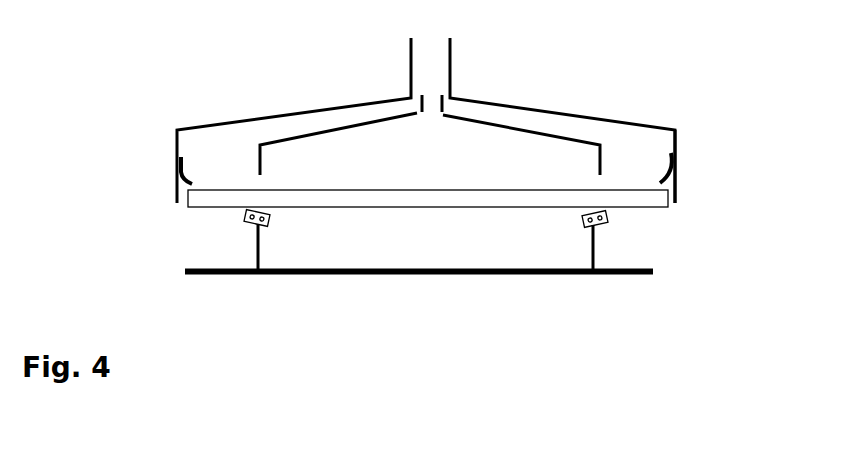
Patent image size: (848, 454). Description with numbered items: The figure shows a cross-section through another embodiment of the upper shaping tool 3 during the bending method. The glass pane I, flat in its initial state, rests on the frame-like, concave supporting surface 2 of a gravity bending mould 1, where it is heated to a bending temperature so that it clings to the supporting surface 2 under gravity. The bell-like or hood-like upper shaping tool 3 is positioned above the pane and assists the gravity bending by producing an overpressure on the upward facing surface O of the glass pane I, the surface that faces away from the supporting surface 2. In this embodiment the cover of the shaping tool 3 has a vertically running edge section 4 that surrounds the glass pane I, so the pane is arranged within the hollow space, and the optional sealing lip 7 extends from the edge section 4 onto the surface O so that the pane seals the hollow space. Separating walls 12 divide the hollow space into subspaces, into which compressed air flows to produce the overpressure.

The gravity bending mould 1 is at (637, 275).
The supporting surface 2 is at (607, 214).
The upper shaping tool 3 is at (499, 104).
The vertical edge section 4 is at (677, 167).
The sealing lip 7 is at (668, 165).
The separating walls 12 is at (545, 134).
The glass pane I is at (192, 200).
The upper surface O is at (370, 188).